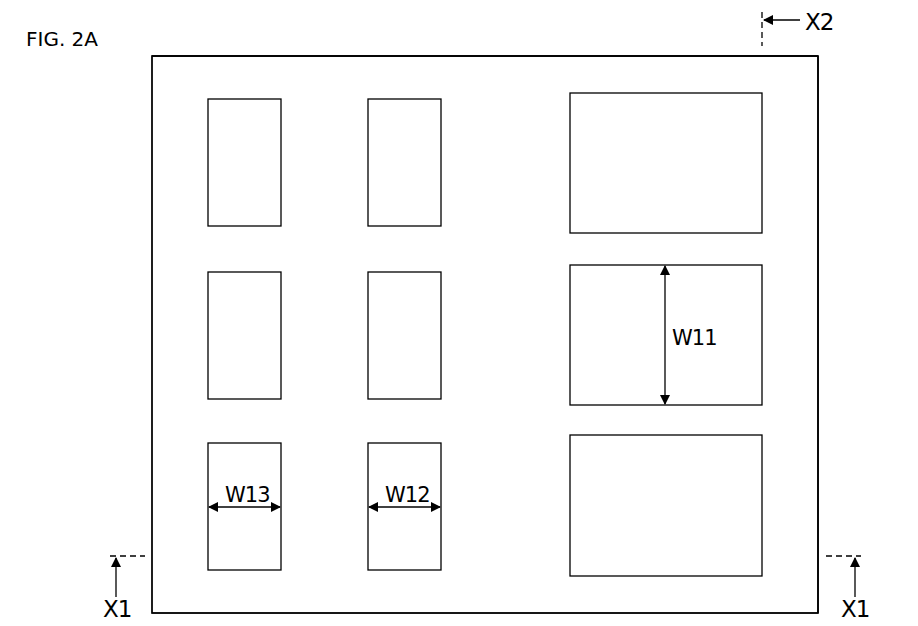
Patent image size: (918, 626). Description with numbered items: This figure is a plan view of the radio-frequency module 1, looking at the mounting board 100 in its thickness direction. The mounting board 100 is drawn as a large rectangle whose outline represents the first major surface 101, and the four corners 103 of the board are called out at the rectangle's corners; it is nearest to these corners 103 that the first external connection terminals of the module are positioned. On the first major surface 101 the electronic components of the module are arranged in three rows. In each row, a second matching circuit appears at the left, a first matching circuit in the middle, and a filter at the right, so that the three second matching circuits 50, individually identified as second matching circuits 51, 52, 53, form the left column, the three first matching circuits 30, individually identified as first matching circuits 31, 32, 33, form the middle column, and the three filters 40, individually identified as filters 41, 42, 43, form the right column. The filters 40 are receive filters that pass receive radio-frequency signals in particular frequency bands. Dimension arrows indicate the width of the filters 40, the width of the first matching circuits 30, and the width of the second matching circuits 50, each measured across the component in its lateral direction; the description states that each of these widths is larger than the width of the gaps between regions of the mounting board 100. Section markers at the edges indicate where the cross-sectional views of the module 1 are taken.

The radio-frequency module 1 is at (633, 48).
The mounting board 100 is at (469, 75).
The first major surface 101 is at (803, 175).
The corners 103 is at (834, 625).
The first matching circuits 30 is at (432, 337).
The first matching circuit 31 is at (432, 186).
The first matching circuit 32 is at (430, 355).
The first matching circuit 33 is at (437, 537).
The filters 40 is at (639, 334).
The filter 41 is at (580, 121).
The filter 42 is at (578, 296).
The filter 43 is at (577, 471).
The second matching circuits 50 is at (272, 334).
The second matching circuit 51 is at (275, 118).
The second matching circuit 52 is at (272, 316).
The second matching circuit 53 is at (273, 463).